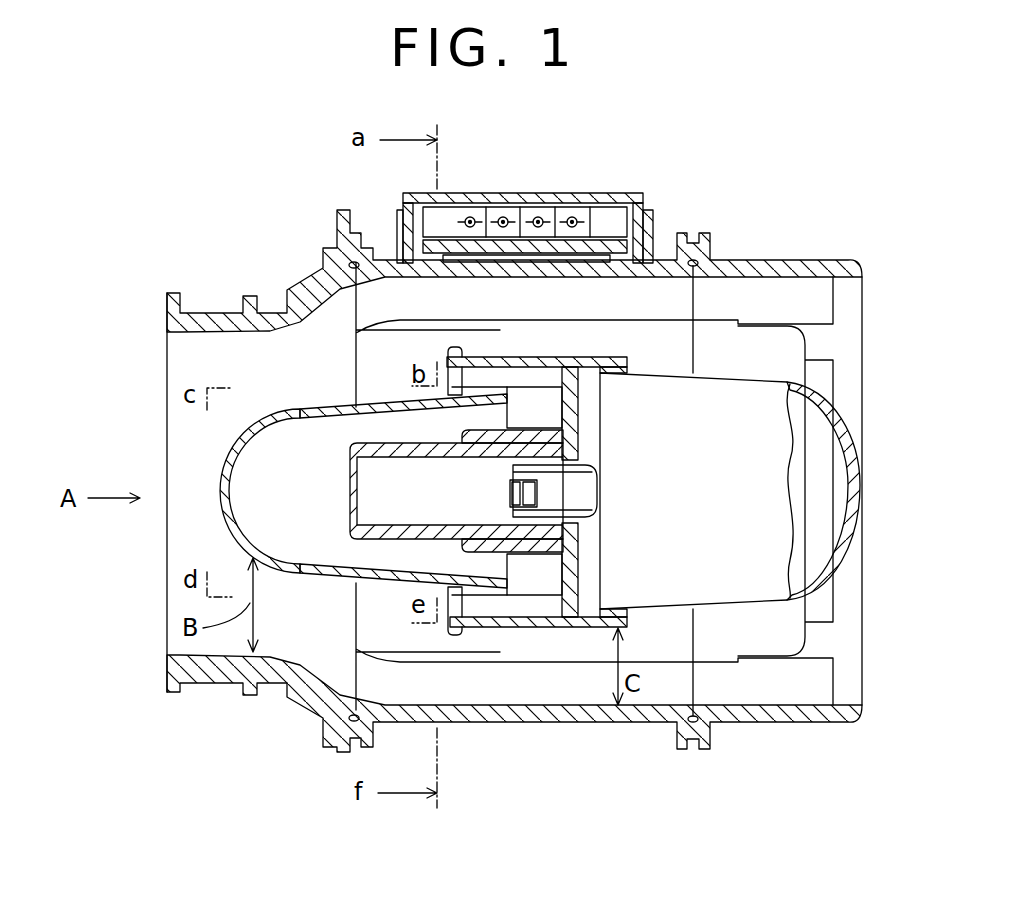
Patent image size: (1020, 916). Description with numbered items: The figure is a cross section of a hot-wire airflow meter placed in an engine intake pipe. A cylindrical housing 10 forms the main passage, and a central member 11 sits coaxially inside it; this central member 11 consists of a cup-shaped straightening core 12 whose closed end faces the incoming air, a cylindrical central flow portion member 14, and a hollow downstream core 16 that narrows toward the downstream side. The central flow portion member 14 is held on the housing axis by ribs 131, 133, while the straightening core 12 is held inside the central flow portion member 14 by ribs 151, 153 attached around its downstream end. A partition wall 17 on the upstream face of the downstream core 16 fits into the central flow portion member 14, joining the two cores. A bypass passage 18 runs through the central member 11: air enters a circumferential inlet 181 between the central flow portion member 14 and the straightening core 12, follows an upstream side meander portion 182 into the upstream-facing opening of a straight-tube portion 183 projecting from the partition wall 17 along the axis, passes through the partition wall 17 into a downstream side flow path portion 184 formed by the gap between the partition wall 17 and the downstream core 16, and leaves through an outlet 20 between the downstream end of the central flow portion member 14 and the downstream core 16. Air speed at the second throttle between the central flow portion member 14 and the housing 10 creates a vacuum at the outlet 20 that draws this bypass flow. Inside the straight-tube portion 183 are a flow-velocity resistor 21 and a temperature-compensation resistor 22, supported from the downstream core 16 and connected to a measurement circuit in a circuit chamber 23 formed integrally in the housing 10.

The housing 10 is at (563, 723).
The central member 11 is at (547, 721).
The straightening core 12 is at (293, 567).
The central flow portion member 14 is at (548, 365).
The downstream core 16 is at (763, 577).
The partition wall 17 is at (571, 550).
The bypass passage 18 is at (386, 374).
The outlet 20 is at (628, 361).
The resistor for measuring flow velocity 21 is at (510, 494).
The resistor for temperature compensation 22 is at (537, 488).
The circuit chamber 23 is at (612, 196).
The rib 131 is at (533, 342).
The lower cylindrical portion of boss 133 is at (540, 640).
The rib 151 is at (462, 378).
The lower flange portion 153 is at (455, 610).
The inlet 181 is at (470, 372).
The upstream side meander portion 182 is at (323, 402).
The straight-tube portion 183 is at (378, 497).
The downstream side flow path portion 184 is at (587, 567).